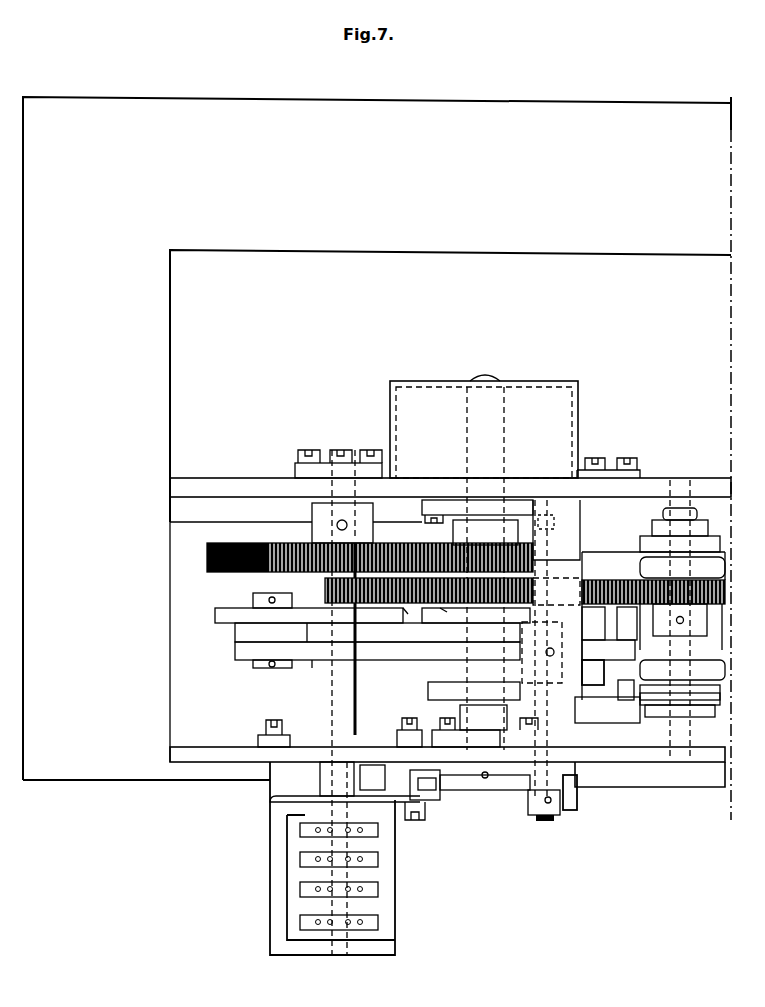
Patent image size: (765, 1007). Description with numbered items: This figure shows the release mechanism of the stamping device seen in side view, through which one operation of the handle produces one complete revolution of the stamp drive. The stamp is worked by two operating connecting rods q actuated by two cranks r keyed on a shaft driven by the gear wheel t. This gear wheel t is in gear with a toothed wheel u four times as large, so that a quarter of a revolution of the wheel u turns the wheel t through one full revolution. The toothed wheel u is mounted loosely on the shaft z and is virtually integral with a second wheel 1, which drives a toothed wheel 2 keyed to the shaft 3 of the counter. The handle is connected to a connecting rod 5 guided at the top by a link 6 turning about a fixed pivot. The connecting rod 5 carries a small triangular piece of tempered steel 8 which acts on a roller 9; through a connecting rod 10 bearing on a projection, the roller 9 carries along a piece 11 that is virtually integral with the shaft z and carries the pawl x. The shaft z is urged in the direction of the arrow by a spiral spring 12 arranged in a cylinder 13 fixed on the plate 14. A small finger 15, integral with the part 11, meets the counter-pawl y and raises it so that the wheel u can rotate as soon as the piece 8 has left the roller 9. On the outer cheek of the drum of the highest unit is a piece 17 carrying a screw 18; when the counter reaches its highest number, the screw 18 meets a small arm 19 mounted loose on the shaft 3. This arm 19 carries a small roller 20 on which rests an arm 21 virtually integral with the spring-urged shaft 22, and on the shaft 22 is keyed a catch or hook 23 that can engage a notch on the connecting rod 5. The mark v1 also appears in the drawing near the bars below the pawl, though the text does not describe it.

The toothed wheel 2 is at (196, 553).
The plate 14 is at (228, 487).
The cylinder 13 is at (399, 383).
The spiral spring 12 is at (572, 438).
The shaft z is at (484, 378).
The shaft of the counter 3 is at (345, 462).
The second wheel 1 is at (477, 522).
The toothed wheel u is at (325, 590).
The pawl x is at (215, 615).
The piece 11 is at (322, 660).
The bar v1 is at (408, 615).
The counter-pawl y is at (447, 612).
The catch or hook 23 is at (430, 692).
The shaft 22 is at (565, 521).
The gear wheel t is at (653, 620).
The connecting rod 10 is at (592, 637).
The small finger 15 is at (629, 623).
The roller 9 is at (590, 672).
The piece 17 is at (270, 800).
The small arm 19 is at (372, 777).
The small roller 20 is at (437, 790).
The screw 18 is at (426, 817).
The arm 21 is at (470, 790).
The connecting rod 5 is at (603, 692).
The link 6 is at (618, 682).
The operating connecting rod q is at (660, 710).
The crank r is at (697, 692).
The piece of tempered steel 8 is at (623, 682).